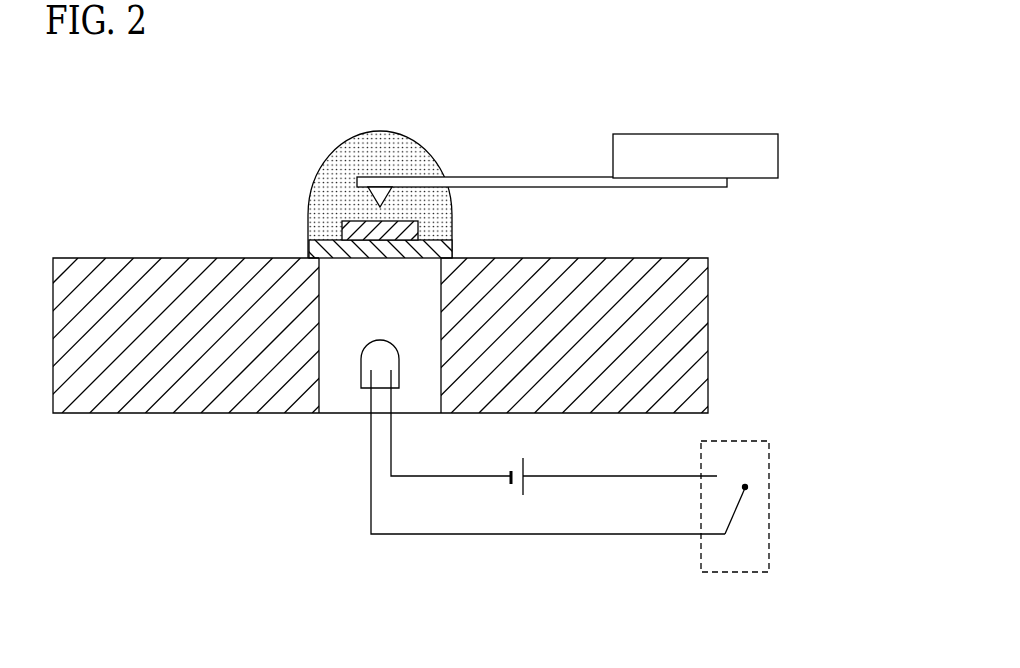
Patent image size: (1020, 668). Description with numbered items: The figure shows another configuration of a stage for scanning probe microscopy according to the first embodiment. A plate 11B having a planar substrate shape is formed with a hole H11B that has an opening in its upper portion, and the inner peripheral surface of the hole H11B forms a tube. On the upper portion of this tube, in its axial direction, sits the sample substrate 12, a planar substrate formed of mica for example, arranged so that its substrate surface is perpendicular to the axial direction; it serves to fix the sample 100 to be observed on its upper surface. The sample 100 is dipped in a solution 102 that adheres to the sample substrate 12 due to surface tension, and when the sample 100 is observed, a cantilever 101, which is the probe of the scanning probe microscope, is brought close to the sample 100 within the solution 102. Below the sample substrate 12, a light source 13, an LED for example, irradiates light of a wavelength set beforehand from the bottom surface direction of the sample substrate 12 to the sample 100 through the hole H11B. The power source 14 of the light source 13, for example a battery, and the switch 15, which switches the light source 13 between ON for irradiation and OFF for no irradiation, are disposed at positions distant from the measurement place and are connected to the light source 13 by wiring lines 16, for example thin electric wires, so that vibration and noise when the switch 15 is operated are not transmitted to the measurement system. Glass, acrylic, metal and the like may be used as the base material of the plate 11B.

The sample 100 is at (341, 232).
The cantilever 101 is at (381, 176).
The solution 102 is at (398, 147).
The sample substrate 12 is at (309, 246).
The plate 11B is at (724, 340).
The hole H11B is at (319, 382).
The light source 13 is at (400, 367).
The power source 14 is at (524, 465).
The switch 15 is at (770, 490).
The wiring lines 16 is at (464, 473).